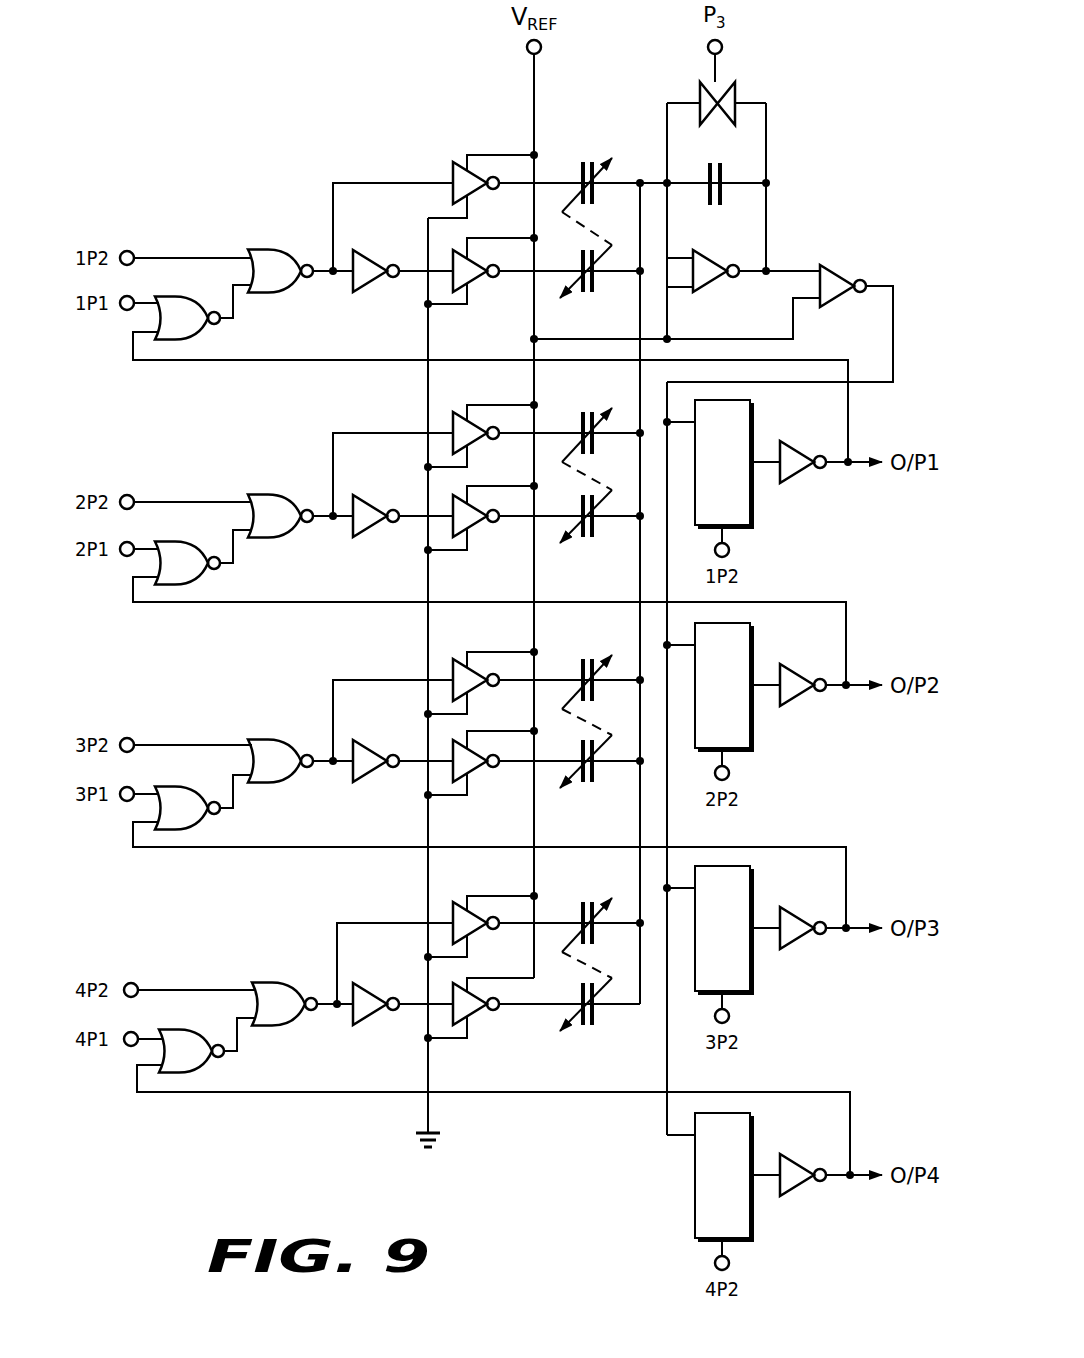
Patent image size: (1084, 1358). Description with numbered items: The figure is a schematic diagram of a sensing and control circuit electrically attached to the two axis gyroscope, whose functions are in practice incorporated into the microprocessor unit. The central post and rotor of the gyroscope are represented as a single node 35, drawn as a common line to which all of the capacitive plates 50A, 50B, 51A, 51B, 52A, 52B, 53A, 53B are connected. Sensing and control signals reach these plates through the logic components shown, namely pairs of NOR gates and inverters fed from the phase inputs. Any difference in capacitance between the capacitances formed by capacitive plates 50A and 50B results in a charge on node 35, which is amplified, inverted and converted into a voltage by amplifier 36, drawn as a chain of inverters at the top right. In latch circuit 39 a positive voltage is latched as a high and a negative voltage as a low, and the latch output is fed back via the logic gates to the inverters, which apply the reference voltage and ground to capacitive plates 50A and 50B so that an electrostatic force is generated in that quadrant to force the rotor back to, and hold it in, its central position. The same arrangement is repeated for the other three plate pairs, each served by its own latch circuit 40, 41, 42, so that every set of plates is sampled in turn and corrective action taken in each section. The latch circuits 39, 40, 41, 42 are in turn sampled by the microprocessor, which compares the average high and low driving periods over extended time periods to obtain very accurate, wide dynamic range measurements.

The node 35 is at (641, 990).
The amplifier 36 is at (708, 258).
The latch circuit 39 is at (750, 507).
The latch circuit 40 is at (750, 730).
The latch circuit 41 is at (750, 973).
The latch circuit 42 is at (750, 1220).
The capacitive plate 50A is at (583, 158).
The capacitive plate 50B is at (590, 294).
The capacitive plate 51A is at (583, 408).
The capacitive plate 51B is at (590, 539).
The capacitive plate 52A is at (583, 655).
The capacitive plate 52B is at (590, 784).
The capacitive plate 53A is at (583, 898).
The capacitive plate 53B is at (590, 1027).